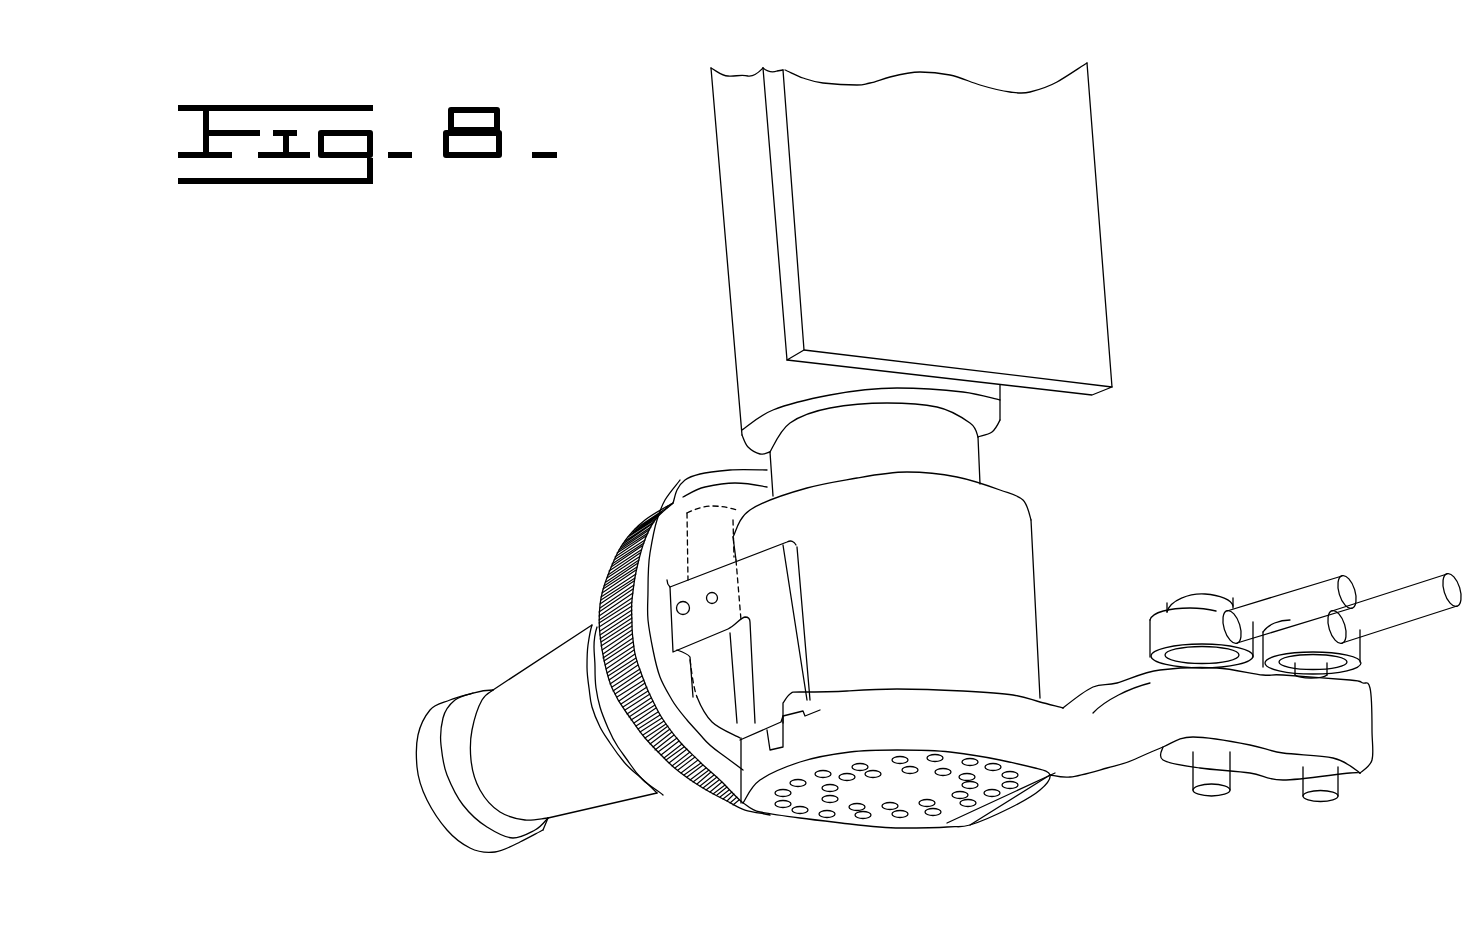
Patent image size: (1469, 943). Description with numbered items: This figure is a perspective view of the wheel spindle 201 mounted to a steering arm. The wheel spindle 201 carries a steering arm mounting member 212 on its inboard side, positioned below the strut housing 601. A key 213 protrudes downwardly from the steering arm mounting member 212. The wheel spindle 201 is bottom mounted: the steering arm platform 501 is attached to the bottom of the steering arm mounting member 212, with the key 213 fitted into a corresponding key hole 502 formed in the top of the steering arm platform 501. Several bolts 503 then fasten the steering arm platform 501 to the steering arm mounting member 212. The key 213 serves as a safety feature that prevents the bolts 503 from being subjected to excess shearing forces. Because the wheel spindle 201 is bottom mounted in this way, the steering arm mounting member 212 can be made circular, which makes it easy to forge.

The strut housing 601 is at (1102, 228).
The steering arm mounting member 212 is at (978, 582).
The wheel spindle 201 is at (590, 624).
The key hole 502 is at (807, 688).
The key 213 is at (797, 735).
The steering arm platform 501 is at (1070, 750).
The bolts 503 is at (877, 817).